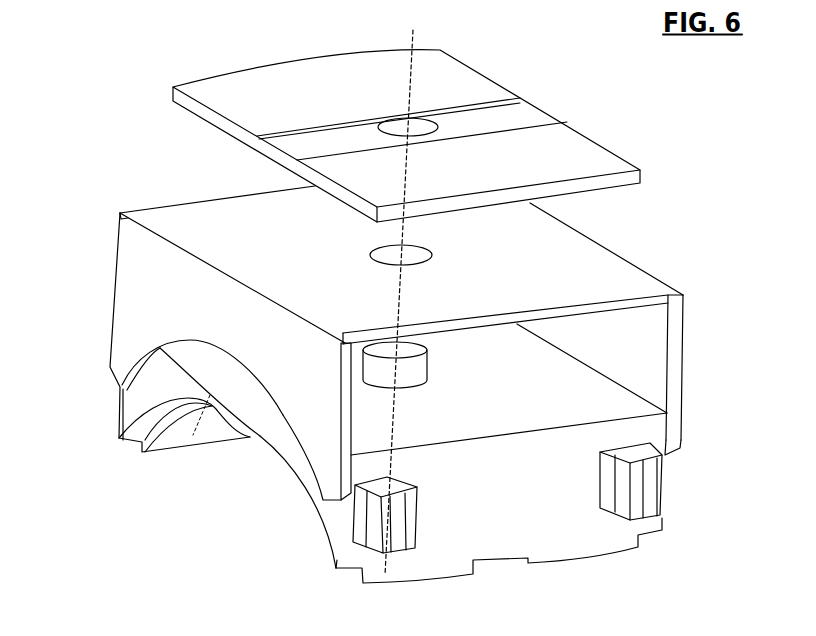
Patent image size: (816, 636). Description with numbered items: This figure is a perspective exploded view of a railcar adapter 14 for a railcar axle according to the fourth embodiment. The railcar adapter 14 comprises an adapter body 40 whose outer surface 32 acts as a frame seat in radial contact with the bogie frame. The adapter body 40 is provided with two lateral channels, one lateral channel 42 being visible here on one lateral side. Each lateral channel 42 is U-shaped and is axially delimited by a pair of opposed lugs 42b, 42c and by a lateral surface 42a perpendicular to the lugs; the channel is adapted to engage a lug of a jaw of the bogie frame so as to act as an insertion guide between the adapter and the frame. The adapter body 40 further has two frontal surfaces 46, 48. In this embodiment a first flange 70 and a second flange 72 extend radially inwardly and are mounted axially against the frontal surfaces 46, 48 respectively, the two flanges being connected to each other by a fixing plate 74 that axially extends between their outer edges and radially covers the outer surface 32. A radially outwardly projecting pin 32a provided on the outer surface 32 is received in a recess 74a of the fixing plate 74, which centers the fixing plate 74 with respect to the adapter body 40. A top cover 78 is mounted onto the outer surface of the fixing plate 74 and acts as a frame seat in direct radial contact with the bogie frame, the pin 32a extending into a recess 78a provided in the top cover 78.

The railcar adapter 14 is at (139, 78).
The top cover 78 is at (213, 84).
The recess 78a is at (428, 128).
The fixing plate 74 is at (168, 215).
The recess 74a is at (445, 250).
The second flange 72 is at (108, 288).
The outer surface 32 is at (580, 380).
The pin 32a is at (340, 349).
The adapter body 40 is at (273, 447).
The frontal surface 48 is at (170, 446).
The first flange 70 is at (684, 373).
The frontal surface 46 is at (666, 462).
The lateral channel 42 is at (348, 531).
The lateral surface 42a is at (498, 527).
The lug 42b is at (400, 554).
The lug 42c is at (643, 531).